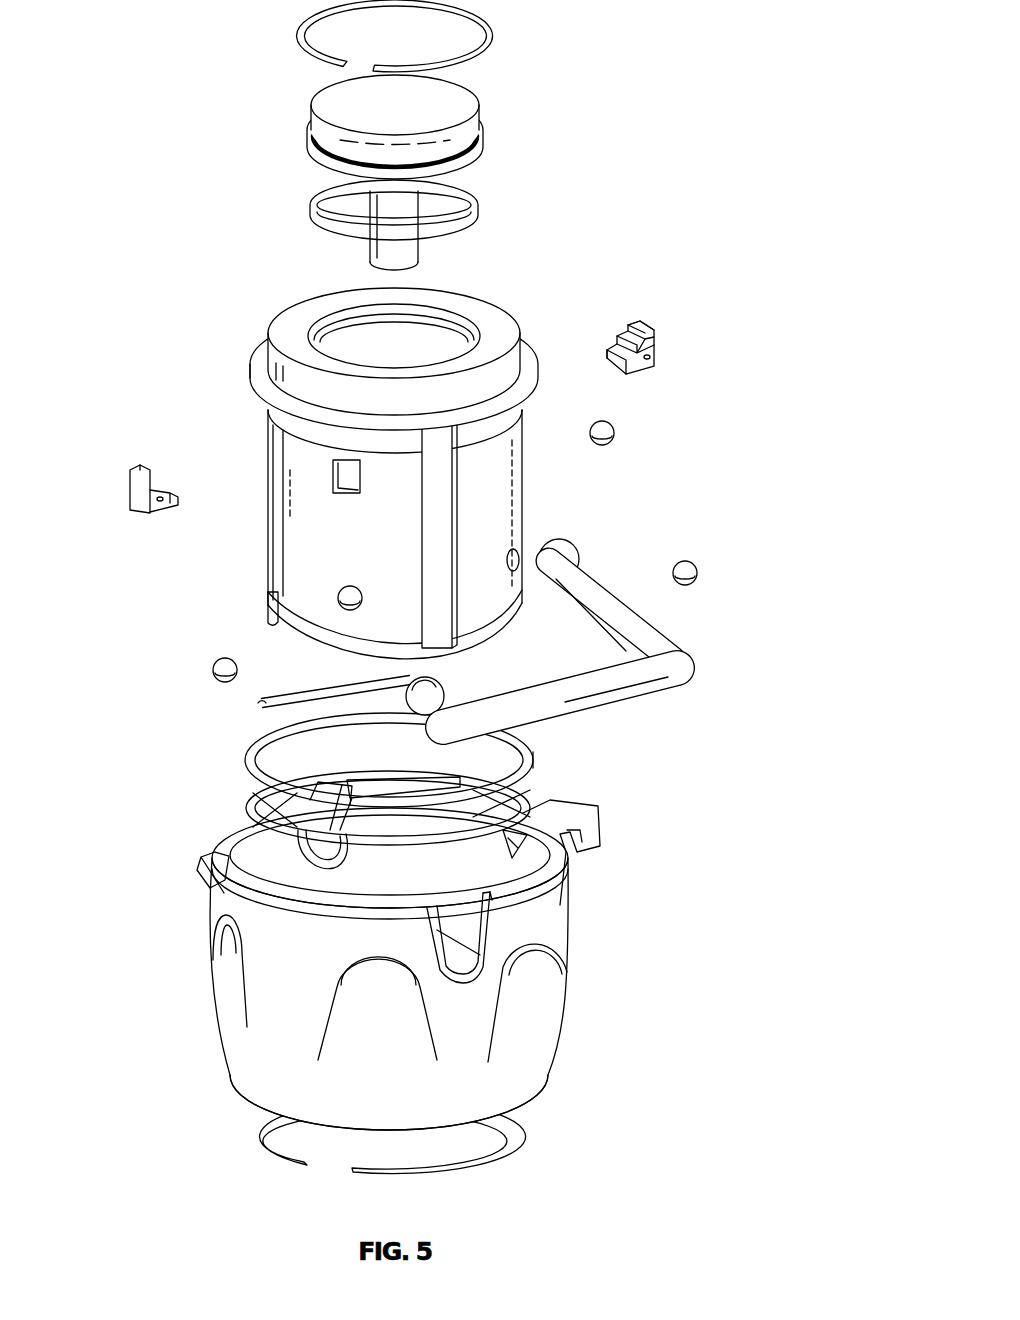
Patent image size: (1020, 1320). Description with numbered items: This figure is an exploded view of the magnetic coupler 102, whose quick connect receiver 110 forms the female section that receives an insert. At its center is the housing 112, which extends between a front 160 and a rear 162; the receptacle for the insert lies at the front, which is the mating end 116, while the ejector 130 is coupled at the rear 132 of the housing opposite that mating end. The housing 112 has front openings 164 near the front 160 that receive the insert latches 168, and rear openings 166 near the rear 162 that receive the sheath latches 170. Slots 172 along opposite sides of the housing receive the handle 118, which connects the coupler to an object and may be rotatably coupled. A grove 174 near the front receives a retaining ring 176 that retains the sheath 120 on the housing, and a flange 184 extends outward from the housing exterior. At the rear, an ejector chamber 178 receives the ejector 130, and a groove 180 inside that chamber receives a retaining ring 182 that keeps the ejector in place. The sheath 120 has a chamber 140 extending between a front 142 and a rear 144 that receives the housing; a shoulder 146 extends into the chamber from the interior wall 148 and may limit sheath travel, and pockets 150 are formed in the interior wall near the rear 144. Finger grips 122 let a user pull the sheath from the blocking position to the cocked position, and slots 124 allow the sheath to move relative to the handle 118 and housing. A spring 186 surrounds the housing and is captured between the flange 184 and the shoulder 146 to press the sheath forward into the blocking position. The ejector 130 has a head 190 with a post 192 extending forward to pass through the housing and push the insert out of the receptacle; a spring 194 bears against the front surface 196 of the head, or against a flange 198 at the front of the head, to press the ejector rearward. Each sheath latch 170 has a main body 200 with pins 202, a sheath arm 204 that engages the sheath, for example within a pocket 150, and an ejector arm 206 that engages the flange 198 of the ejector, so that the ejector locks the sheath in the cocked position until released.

The magnetic coupler 102 is at (422, 587).
The quick connect receiver 110 is at (377, 469).
The housing 112 is at (377, 548).
The mating end 116 is at (300, 648).
The handle 118 is at (652, 700).
The sheath 120 is at (416, 956).
The finger grips 122 is at (583, 805).
The slots 124 is at (500, 916).
The ejector 130 is at (458, 117).
The rear 132 is at (405, 333).
The chamber 140 is at (388, 810).
The front 142 is at (248, 1093).
The rear 144 is at (228, 845).
The shoulder 146 is at (528, 777).
The interior wall 148 is at (545, 738).
The pockets 150 is at (528, 838).
The front 160 is at (512, 628).
The rear 162 is at (527, 343).
The front openings 164 is at (344, 617).
The rear openings 166 is at (325, 468).
The insert latches 168 is at (614, 434).
The sheath latches 170 is at (130, 490).
The slots 172 is at (448, 652).
The grove 174 is at (258, 602).
The retaining ring 176 is at (508, 1133).
The ejector chamber 178 is at (457, 322).
The groove 180 is at (328, 322).
The retaining ring 182 is at (483, 37).
The flange 184 is at (254, 394).
The spring 186 is at (415, 760).
The head 190 is at (470, 118).
The post 192 is at (413, 208).
The spring 194 is at (470, 224).
The front surface 196 is at (485, 168).
The flange 198 is at (490, 152).
The main body 200 is at (640, 370).
The pins 202 is at (652, 357).
The sheath arm 204 is at (640, 323).
The ejector arm 206 is at (617, 365).